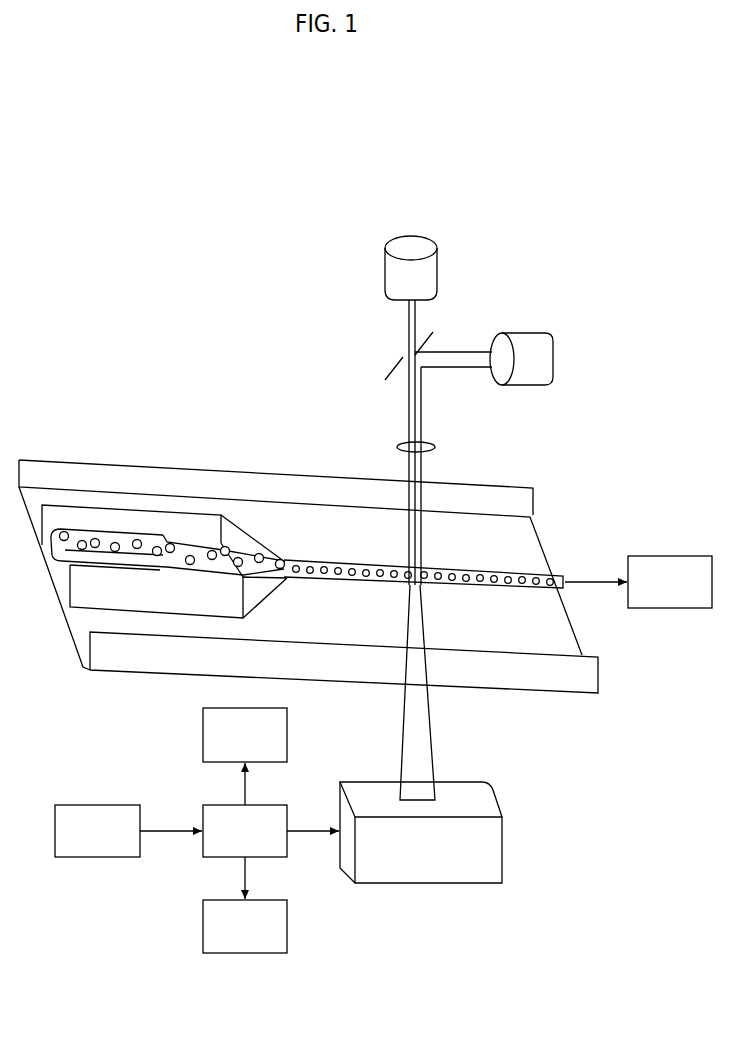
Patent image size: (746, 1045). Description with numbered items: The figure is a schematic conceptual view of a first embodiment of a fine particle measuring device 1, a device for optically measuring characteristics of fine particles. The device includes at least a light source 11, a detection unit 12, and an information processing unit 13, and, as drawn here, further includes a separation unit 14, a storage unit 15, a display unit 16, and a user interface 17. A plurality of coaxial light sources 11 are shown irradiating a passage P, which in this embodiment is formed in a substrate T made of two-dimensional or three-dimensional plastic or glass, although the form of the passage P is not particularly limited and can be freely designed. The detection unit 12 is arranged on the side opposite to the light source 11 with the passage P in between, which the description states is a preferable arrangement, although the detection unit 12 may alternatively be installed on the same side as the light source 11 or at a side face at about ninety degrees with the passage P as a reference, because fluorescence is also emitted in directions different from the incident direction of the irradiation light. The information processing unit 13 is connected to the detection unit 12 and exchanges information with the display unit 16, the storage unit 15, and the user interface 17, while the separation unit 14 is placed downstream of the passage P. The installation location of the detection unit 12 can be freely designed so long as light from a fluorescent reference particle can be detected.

The fine particle measuring device 1 is at (668, 218).
The light source 11 is at (410, 245).
The detection unit 12 is at (488, 850).
The information processing unit 13 is at (245, 831).
The separation unit 14 is at (670, 582).
The storage unit 15 is at (245, 926).
The display unit 16 is at (245, 735).
The user interface 17 is at (97, 831).
The substrate T is at (310, 522).
The passage P is at (197, 573).